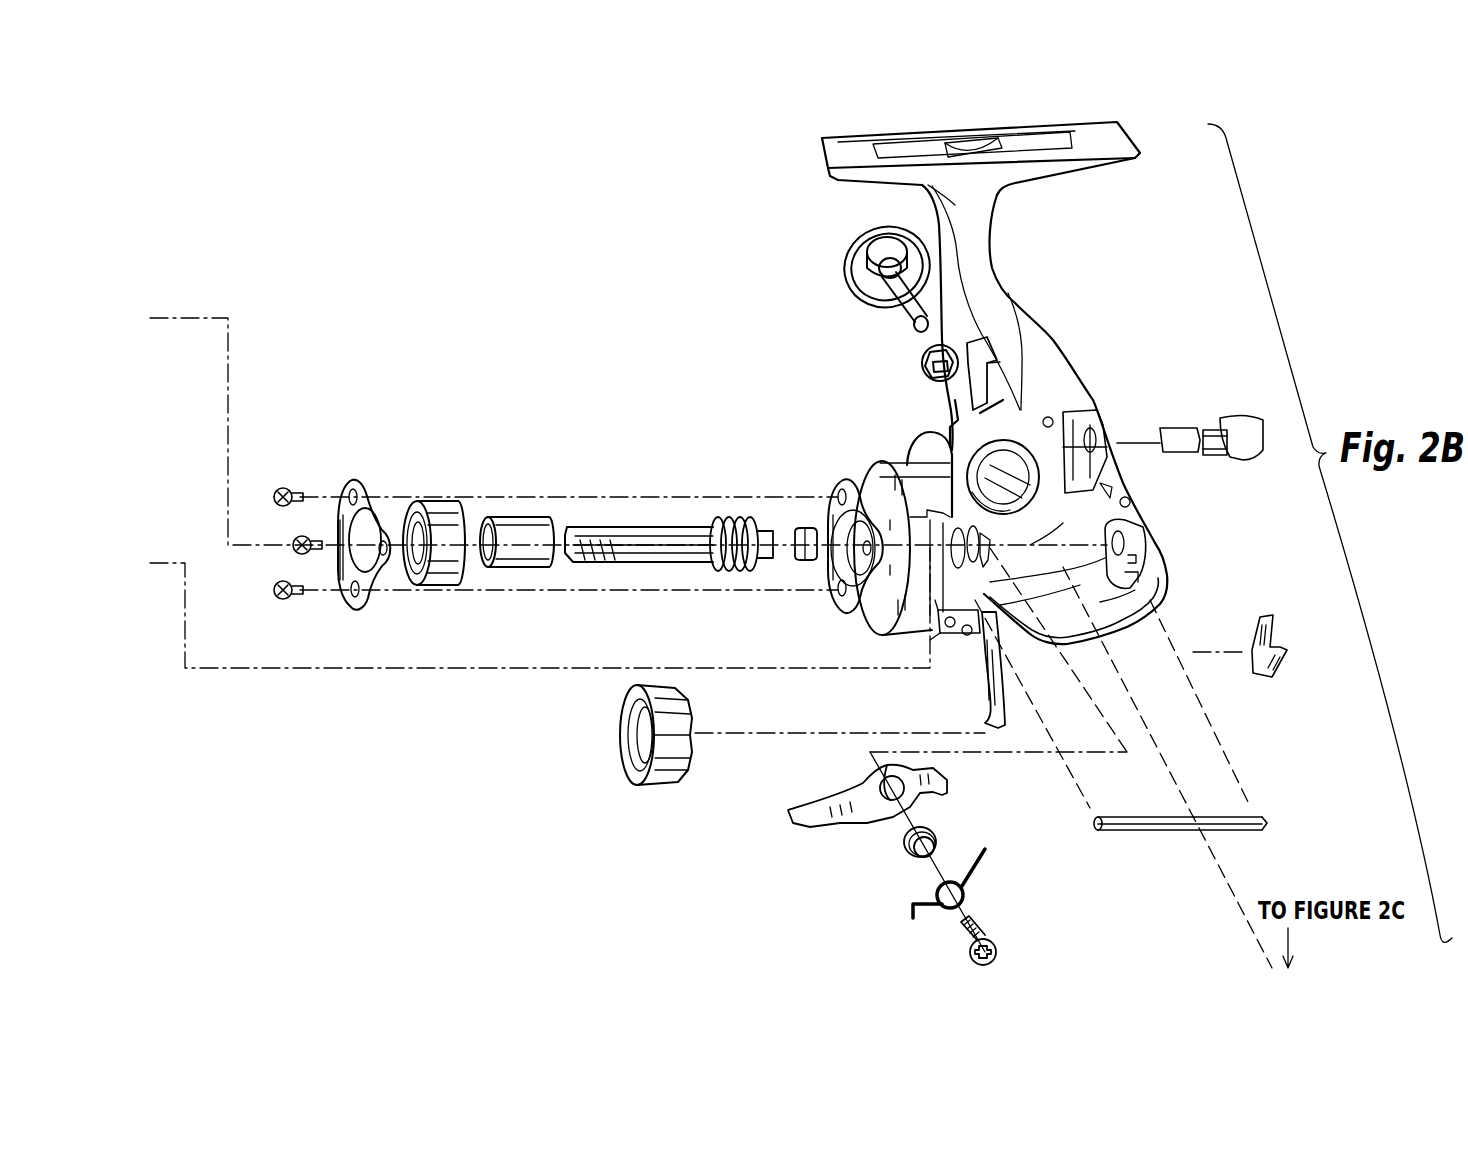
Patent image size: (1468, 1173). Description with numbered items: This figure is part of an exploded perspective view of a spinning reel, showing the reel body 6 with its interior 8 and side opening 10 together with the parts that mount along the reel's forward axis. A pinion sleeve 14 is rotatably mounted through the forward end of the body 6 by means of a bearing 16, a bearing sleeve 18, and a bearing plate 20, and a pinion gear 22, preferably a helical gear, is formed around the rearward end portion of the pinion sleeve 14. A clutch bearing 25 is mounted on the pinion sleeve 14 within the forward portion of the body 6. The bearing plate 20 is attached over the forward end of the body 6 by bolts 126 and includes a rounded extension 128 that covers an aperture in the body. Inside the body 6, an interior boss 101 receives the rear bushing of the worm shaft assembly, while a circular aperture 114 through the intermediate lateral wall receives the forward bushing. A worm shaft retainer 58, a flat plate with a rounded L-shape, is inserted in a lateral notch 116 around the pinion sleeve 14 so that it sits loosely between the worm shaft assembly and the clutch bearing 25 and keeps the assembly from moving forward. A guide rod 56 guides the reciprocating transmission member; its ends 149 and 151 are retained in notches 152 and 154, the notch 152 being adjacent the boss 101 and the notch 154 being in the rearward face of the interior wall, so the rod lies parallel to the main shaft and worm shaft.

The reel body 6 is at (1048, 357).
The interior 8 is at (1100, 602).
The side opening 10 is at (1063, 523).
The boss 101 is at (1107, 545).
The pinion sleeve 14 is at (670, 527).
The bearing 16 is at (440, 506).
The bearing sleeve 18 is at (528, 518).
The bearing plate 20 is at (360, 490).
The pinion gear 22 is at (728, 516).
The clutch bearing 25 is at (635, 784).
The guide rod 56 is at (1168, 826).
The worm shaft retainer 58 is at (985, 700).
The circular aperture 114 is at (948, 553).
The lateral notch 116 is at (933, 637).
The bolts 126 is at (285, 487).
The rounded extension 128 is at (336, 563).
The end of guide rod 149 is at (1097, 826).
The end of guide rod 151 is at (1268, 823).
The notch 152 is at (1163, 597).
The notch 154 is at (1040, 632).